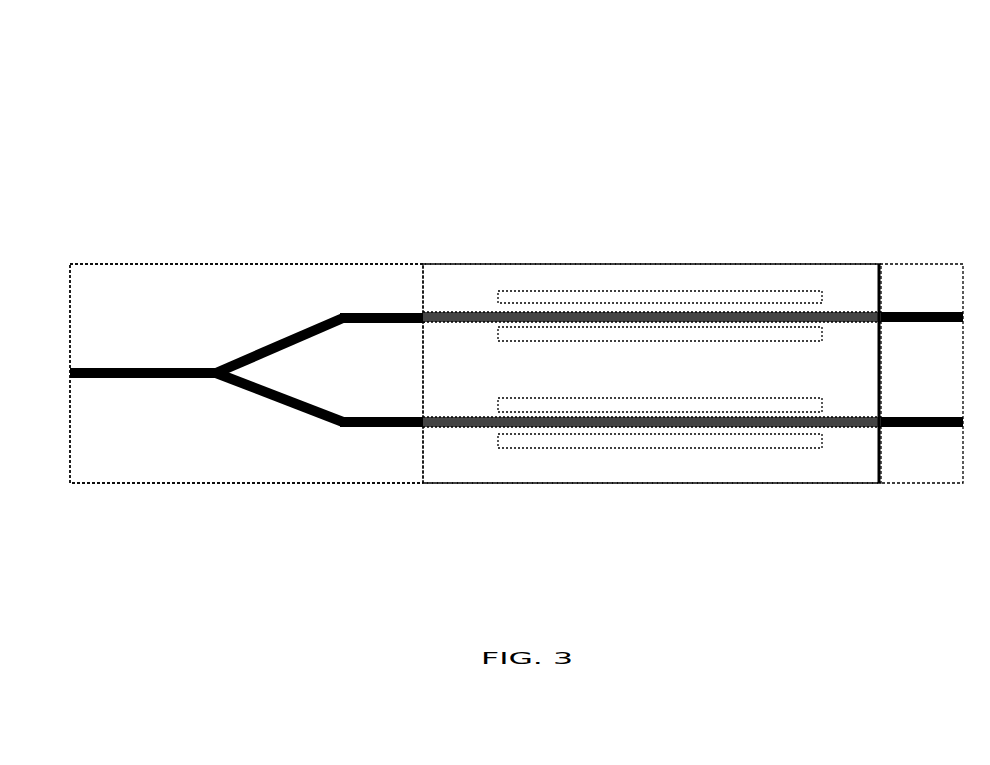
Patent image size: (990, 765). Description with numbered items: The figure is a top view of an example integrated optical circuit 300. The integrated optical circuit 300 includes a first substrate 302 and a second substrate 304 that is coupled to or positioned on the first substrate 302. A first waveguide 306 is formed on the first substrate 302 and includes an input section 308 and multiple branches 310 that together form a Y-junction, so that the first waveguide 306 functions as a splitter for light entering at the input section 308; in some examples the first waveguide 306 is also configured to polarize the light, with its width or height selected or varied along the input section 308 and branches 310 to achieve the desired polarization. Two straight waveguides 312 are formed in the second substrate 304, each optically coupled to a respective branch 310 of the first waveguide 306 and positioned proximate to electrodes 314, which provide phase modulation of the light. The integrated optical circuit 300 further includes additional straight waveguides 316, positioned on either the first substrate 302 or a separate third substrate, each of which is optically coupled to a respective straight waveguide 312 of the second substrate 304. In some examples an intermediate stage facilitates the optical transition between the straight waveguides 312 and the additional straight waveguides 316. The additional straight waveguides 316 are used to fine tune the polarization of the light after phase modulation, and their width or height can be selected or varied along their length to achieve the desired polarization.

The integrated optical circuit 300 is at (108, 134).
The first substrate 302 is at (247, 263).
The second substrate 304 is at (652, 263).
The first waveguide 306 is at (208, 402).
The input section 308 is at (167, 368).
The branches 310 is at (305, 327).
The straight waveguides 312 is at (868, 324).
The electrodes 314 is at (522, 300).
The additional straight waveguides 316 is at (955, 325).